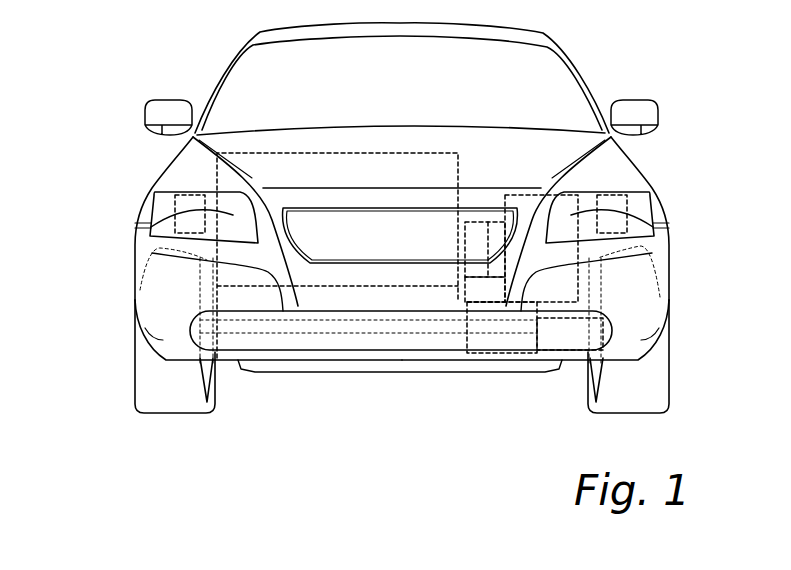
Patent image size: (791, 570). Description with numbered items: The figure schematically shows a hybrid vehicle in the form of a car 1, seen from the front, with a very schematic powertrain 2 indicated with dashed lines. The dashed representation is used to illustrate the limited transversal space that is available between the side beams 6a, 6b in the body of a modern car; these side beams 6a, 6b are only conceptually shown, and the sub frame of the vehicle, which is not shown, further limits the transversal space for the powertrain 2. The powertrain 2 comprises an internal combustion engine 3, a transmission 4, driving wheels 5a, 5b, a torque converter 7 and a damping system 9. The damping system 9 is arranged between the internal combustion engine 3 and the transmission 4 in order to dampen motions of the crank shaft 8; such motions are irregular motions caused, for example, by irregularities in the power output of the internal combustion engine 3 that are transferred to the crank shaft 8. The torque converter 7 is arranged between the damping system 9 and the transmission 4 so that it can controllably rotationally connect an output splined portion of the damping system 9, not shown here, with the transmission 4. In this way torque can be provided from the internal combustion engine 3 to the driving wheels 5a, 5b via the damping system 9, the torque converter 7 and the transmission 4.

The car 1 is at (96, 47).
The powertrain 2 is at (510, 393).
The internal combustion engine 3 is at (136, 225).
The transmission 4 is at (563, 253).
The driving wheel 5a is at (648, 390).
The driving wheel 5b is at (163, 387).
The side beam 6a is at (628, 205).
The side beam 6b is at (180, 193).
The torque converter 7 is at (493, 272).
The crank shaft 8 is at (463, 257).
The damping system 9 is at (463, 257).